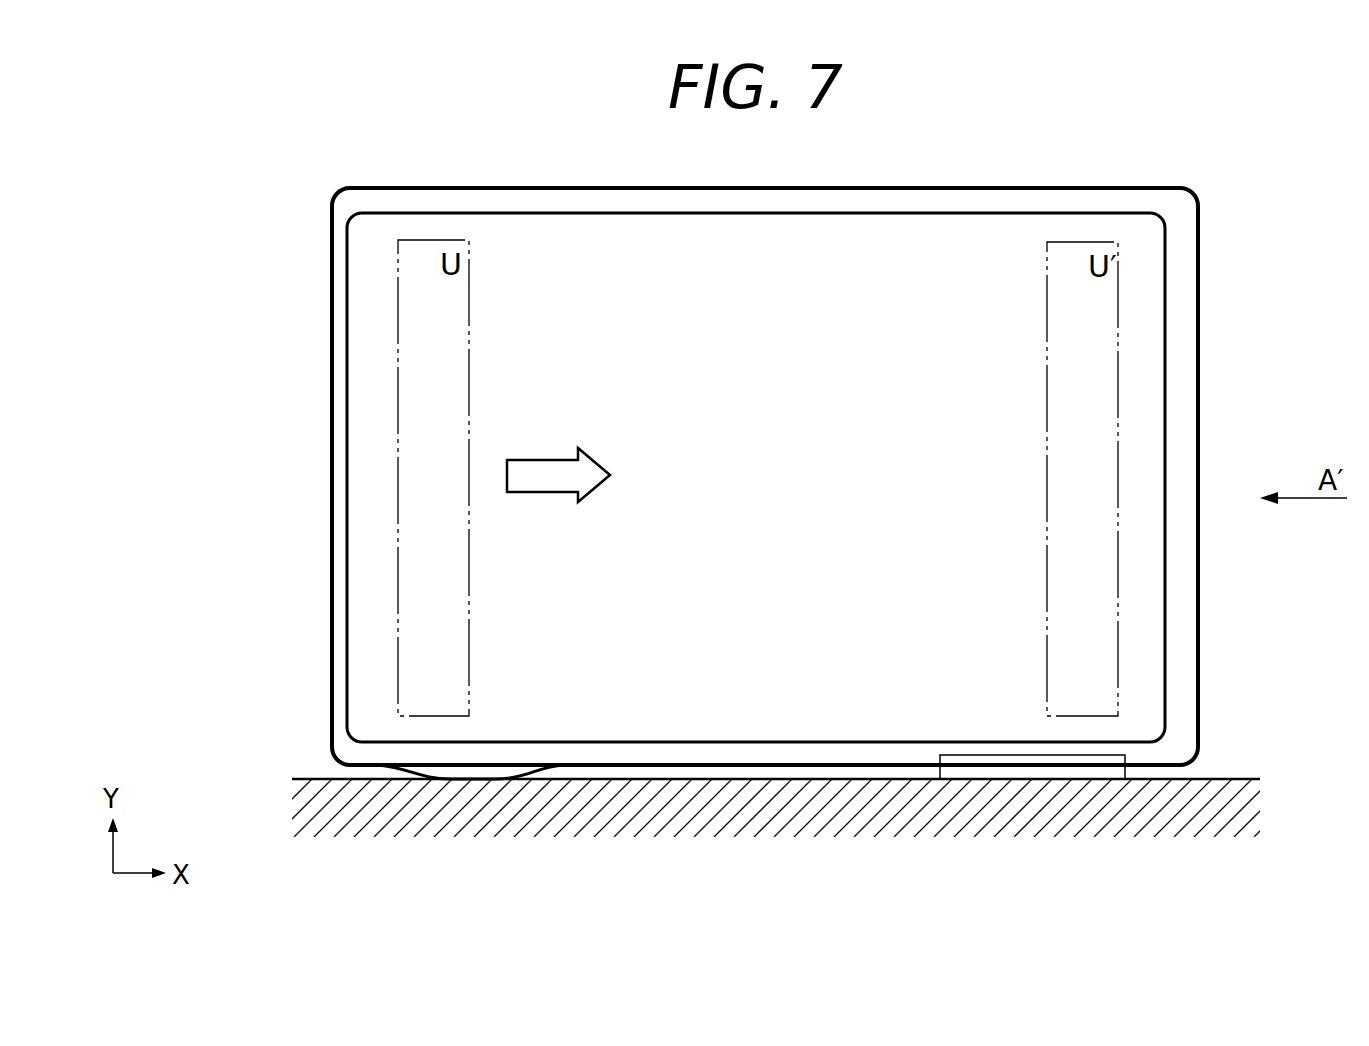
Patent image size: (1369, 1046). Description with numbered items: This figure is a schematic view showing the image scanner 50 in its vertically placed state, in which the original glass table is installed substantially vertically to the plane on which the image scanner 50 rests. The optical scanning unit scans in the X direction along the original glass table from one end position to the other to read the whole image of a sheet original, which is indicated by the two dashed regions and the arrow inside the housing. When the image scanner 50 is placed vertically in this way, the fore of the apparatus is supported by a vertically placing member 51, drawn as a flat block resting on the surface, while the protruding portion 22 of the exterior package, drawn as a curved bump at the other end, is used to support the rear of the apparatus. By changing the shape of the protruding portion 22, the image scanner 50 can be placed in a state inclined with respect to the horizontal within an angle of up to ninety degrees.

The protruding portion 22 is at (485, 773).
The image scanner 50 is at (1222, 645).
The vertically placing member 51 is at (1062, 773).